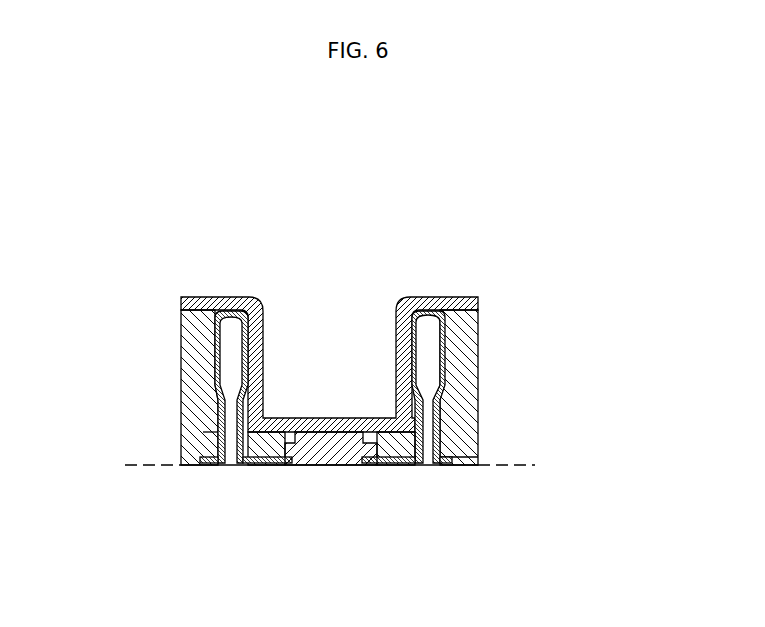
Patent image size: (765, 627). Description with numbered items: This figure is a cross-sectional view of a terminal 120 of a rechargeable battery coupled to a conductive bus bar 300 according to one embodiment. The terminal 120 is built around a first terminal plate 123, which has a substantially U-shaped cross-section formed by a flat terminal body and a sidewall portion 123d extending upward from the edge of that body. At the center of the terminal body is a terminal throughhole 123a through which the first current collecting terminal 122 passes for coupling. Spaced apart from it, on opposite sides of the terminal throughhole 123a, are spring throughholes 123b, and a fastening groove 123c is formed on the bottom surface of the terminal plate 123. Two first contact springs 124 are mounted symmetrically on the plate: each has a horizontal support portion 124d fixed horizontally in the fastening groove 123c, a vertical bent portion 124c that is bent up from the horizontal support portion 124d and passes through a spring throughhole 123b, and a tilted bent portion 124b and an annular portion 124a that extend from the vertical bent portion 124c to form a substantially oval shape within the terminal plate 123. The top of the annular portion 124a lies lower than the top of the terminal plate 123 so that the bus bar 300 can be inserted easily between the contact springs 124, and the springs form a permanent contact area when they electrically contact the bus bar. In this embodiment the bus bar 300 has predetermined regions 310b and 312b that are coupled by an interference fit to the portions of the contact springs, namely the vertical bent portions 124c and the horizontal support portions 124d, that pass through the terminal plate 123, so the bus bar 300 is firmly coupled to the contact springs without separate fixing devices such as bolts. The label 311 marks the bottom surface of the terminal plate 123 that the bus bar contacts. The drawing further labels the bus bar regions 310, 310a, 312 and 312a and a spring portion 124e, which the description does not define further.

The terminal 120 is at (344, 198).
The first current collecting terminal 122 is at (346, 474).
The first terminal plate 123 is at (178, 321).
The terminal throughhole 123a is at (278, 479).
The spring throughhole 123b is at (190, 466).
The fastening groove 123c is at (243, 467).
The sidewall portion 123d is at (190, 400).
The first contact springs 124 is at (610, 530).
The annular portion 124a is at (447, 366).
The tilted bent portion 124b is at (447, 400).
The vertical bent portion 124c is at (447, 428).
The horizontal support portion 124d is at (477, 457).
The second bottom layer 124e is at (387, 465).
The conductive bus bar 300 is at (470, 292).
The conductive bus bar 310 is at (212, 236).
The first upper portion 310a is at (263, 340).
The predetermined region 310b is at (267, 408).
The bottom surface 311 is at (333, 418).
The second wall portion of cover 312 is at (357, 236).
The second vertical portion 312a is at (397, 408).
The predetermined region 312b is at (397, 338).